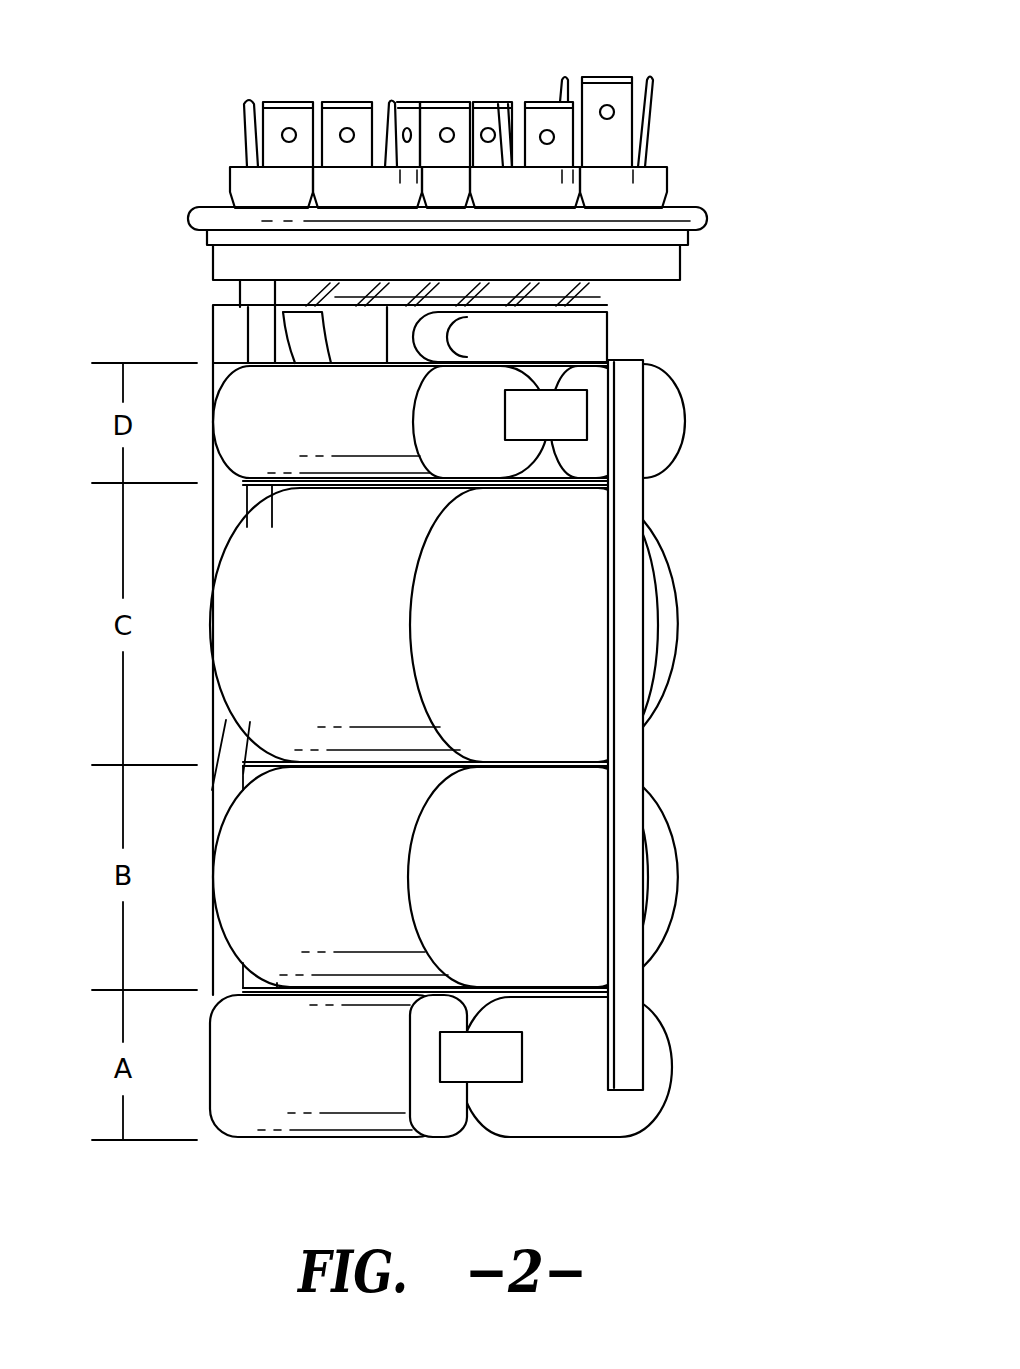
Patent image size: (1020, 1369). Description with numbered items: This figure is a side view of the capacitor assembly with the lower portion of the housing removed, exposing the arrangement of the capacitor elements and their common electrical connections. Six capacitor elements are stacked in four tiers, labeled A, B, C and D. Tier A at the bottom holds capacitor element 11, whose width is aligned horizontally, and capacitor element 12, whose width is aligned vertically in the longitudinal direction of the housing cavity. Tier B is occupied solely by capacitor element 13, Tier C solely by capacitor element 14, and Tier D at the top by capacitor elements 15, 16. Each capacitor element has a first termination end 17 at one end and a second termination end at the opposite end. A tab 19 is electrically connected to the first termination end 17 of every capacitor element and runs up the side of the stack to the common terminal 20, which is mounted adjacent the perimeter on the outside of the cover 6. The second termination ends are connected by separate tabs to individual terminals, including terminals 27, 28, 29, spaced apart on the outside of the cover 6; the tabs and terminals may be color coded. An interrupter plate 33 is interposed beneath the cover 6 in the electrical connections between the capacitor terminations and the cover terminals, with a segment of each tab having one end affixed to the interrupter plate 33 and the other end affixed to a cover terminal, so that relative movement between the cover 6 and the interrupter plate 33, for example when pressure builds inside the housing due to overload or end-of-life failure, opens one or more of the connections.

The cover 6 is at (190, 218).
The capacitor element 11 is at (572, 1087).
The capacitor element 12 is at (447, 1107).
The capacitor element 13 is at (580, 852).
The capacitor element 14 is at (577, 580).
The capacitor element 15 is at (660, 420).
The capacitor element 16 is at (480, 397).
The first termination end 17 is at (655, 647).
The tab 19 is at (622, 470).
The common terminal 20 is at (597, 97).
The individual terminal 27 is at (360, 183).
The individual terminal 28 is at (277, 120).
The individual terminal 29 is at (513, 182).
The interrupter plate 33 is at (657, 260).